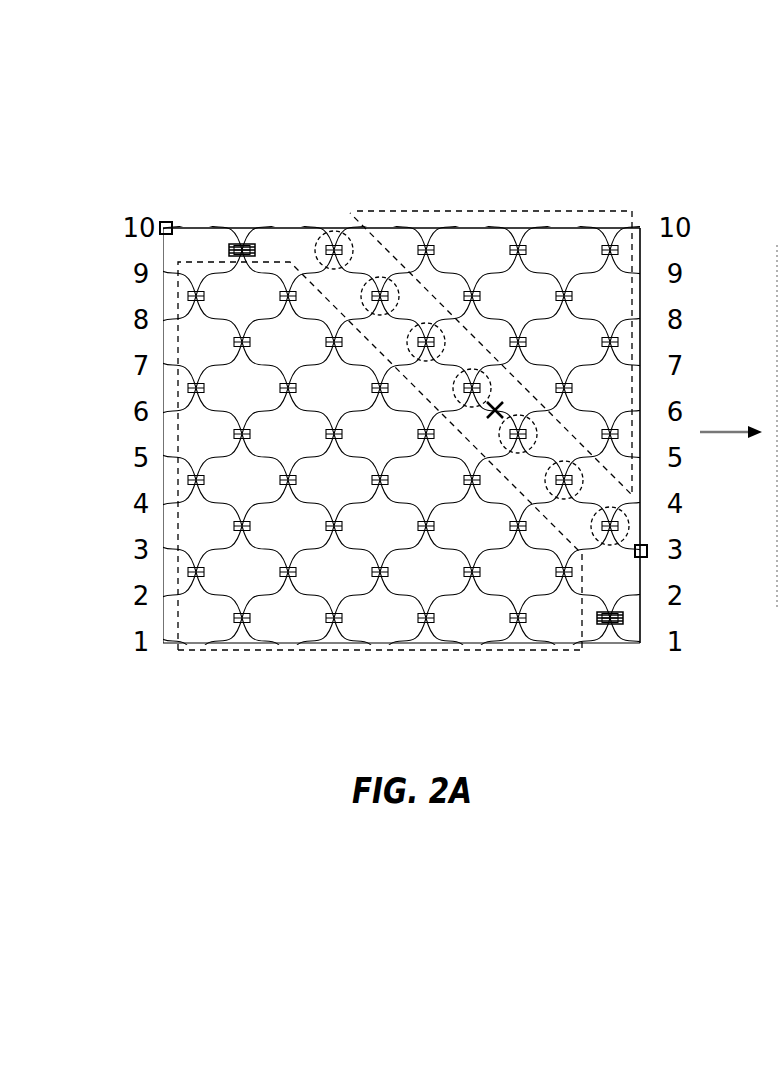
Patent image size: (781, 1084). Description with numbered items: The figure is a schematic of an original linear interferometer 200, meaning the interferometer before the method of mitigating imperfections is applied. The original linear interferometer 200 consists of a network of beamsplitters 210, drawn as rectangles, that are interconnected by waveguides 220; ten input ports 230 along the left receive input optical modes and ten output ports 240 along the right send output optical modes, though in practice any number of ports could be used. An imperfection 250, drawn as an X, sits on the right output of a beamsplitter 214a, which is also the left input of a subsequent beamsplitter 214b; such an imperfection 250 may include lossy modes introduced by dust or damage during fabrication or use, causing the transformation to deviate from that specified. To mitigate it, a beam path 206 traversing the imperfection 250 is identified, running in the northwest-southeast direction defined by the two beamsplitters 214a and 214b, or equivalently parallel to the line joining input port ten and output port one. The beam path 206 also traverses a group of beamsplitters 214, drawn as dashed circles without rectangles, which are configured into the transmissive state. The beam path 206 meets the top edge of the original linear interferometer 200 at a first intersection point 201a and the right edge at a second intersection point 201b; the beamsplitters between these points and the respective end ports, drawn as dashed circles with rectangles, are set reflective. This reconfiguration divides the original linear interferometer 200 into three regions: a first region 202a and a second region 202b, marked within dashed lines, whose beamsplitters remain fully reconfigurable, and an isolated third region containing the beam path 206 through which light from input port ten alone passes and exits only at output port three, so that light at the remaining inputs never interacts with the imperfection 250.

The original linear interferometer 200 is at (410, 141).
The first intersection point 201a is at (326, 222).
The second intersection point 201b is at (621, 563).
The first region 202a is at (499, 209).
The second region 202b is at (466, 654).
The beam path 206 is at (648, 564).
The network of beamsplitters 210 is at (242, 536).
The beamsplitters on the beam path 214 is at (426, 314).
The beamsplitter 214a is at (475, 362).
The subsequent beamsplitter 214b is at (538, 426).
The waveguides 220 is at (397, 608).
The input ports 230 is at (144, 207).
The output ports 240 is at (674, 206).
The imperfection 250 is at (501, 394).